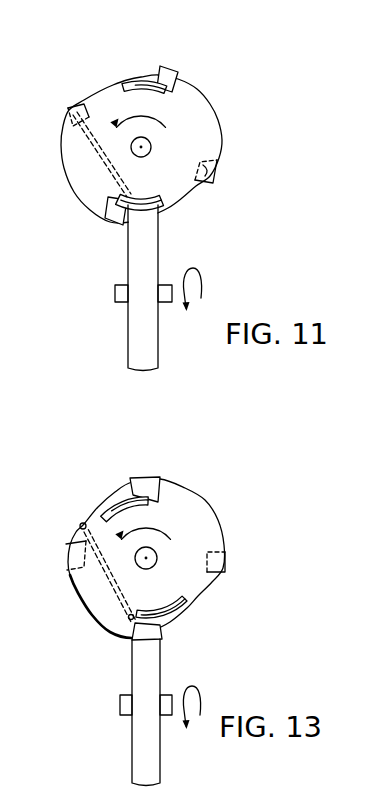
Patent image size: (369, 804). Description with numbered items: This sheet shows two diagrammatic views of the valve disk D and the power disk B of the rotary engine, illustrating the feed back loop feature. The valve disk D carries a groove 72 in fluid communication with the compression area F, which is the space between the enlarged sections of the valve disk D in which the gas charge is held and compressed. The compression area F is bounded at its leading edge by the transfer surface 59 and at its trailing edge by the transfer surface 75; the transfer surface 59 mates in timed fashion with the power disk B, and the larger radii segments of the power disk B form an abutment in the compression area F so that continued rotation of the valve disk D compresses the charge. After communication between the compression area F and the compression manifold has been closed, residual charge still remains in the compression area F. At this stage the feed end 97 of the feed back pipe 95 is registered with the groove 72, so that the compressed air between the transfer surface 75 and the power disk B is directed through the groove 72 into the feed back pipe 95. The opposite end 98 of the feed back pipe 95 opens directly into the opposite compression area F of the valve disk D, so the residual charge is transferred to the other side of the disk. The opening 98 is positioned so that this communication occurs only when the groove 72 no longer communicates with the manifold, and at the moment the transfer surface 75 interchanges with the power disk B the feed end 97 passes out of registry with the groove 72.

In FIG. 11, the transfer surface 75 is at (166, 72).
In FIG. 11, the opposite end of feed back pipe 98 is at (76, 114).
In FIG. 11, the feed back loop pipe 95 is at (98, 163).
In FIG. 11, the feed end of feed back pipe 97 is at (129, 197).
In FIG. 11, the groove 72 is at (150, 206).
In FIG. 11, the transfer surface 59 is at (212, 173).
In FIG. 11, the compression area F is at (113, 80).
In FIG. 13, the compression area F is at (96, 505).
In FIG. 11, the valve disk D is at (206, 110).
In FIG. 11, the power disk B is at (154, 257).
In FIG. 13, the power disk B is at (151, 671).